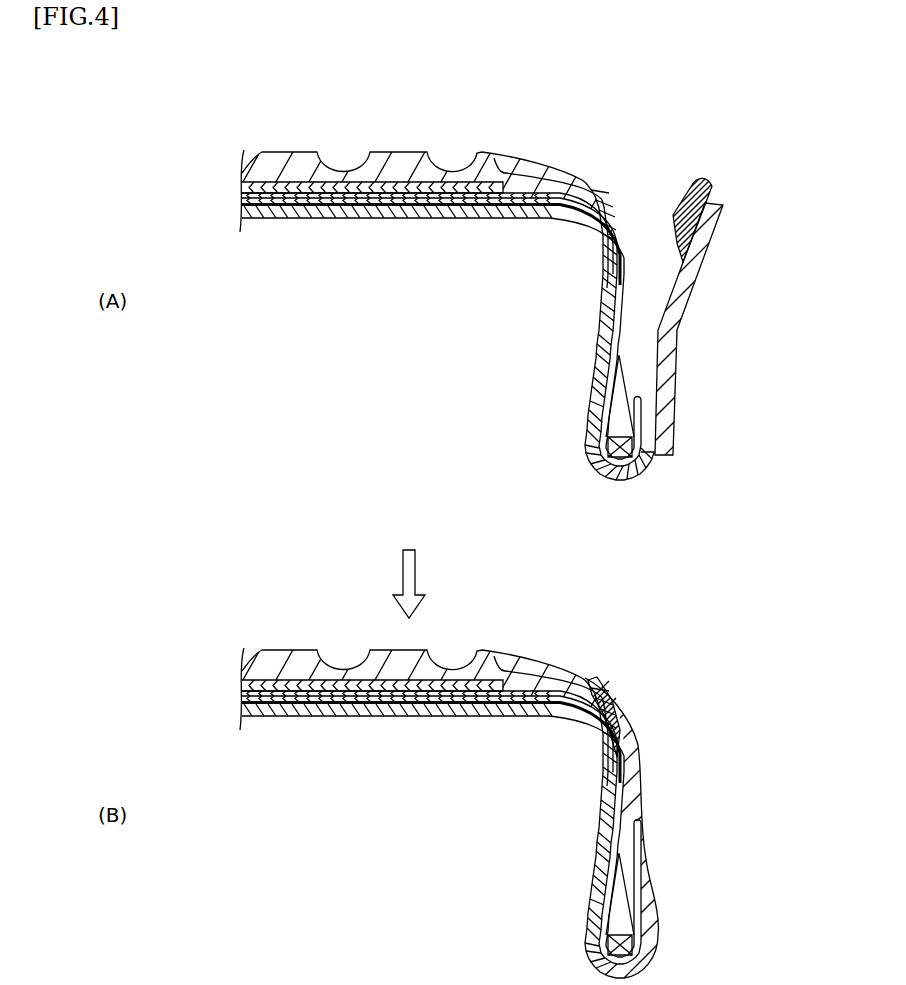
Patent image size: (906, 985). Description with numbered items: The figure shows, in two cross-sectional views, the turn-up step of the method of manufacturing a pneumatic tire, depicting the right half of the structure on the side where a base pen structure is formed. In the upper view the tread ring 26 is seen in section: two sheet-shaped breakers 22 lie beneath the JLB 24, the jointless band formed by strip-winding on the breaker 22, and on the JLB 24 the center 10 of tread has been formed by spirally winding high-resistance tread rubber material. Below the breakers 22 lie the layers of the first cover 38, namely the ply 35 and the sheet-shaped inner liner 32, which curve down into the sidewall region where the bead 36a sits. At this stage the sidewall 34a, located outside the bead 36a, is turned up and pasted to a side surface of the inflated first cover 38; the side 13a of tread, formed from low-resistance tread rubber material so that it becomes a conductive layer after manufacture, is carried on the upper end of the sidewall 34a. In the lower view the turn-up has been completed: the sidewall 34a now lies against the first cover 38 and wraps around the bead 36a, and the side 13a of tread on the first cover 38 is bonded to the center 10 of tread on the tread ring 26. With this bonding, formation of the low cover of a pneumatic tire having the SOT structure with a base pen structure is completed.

The center of tread 10 is at (514, 150).
The side of tread 13a is at (686, 188).
The breaker 22 is at (313, 196).
The JLB (jointless band) 24 is at (237, 187).
The tread ring 26 is at (405, 144).
The inner liner 32 is at (397, 212).
The sidewall 34a is at (683, 284).
The ply 35 is at (469, 206).
The bead 36a is at (612, 446).
The first cover 38 is at (578, 367).